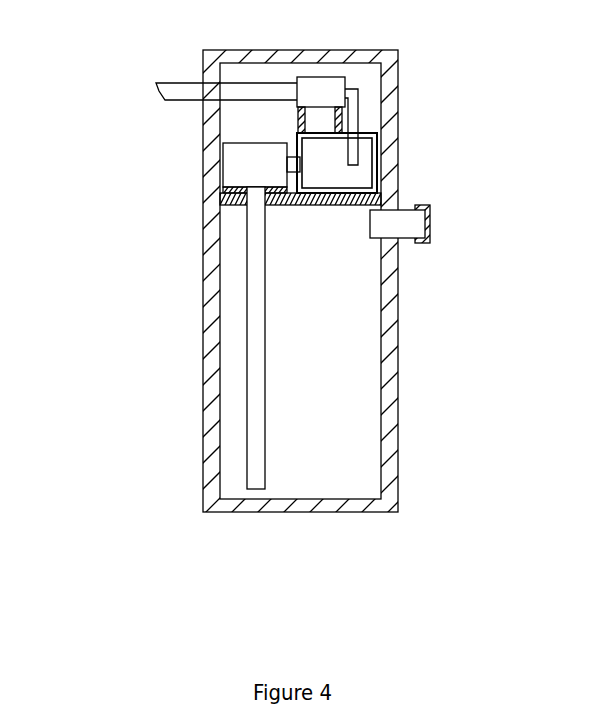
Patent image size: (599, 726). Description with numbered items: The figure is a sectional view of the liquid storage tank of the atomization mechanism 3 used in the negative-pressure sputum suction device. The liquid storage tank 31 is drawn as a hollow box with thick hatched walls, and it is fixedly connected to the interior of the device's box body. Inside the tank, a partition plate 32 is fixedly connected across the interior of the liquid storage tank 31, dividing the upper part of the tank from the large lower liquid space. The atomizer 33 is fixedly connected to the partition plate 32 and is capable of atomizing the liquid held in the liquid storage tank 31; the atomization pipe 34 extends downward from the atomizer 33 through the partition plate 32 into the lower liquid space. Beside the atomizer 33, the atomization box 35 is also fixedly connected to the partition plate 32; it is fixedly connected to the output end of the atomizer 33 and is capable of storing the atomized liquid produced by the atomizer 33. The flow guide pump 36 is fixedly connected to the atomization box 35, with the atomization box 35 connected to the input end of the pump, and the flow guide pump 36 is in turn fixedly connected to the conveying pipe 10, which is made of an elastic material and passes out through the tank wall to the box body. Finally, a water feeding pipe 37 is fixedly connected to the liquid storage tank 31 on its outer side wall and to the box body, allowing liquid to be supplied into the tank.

The atomization mechanism 3 is at (198, 387).
The conveying pipe 10 is at (187, 85).
The liquid storage tank 31 is at (385, 370).
The partition plate 32 is at (225, 199).
The atomizer 33 is at (240, 160).
The atomization pipe 34 is at (258, 290).
The atomization box 35 is at (378, 168).
The flow guide pump 36 is at (330, 92).
The water feeding pipe 37 is at (400, 226).